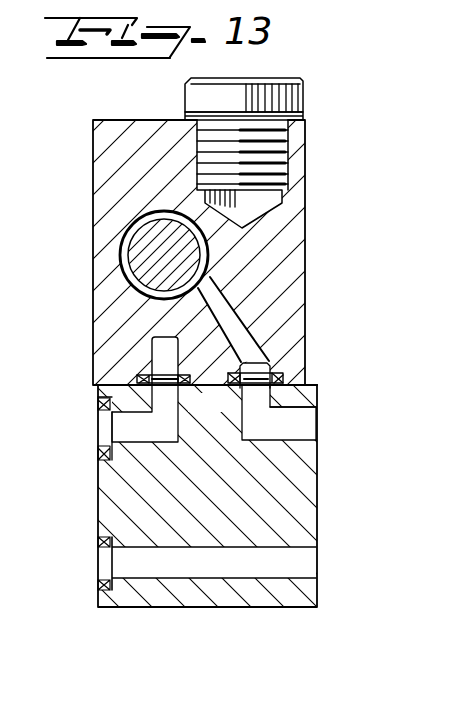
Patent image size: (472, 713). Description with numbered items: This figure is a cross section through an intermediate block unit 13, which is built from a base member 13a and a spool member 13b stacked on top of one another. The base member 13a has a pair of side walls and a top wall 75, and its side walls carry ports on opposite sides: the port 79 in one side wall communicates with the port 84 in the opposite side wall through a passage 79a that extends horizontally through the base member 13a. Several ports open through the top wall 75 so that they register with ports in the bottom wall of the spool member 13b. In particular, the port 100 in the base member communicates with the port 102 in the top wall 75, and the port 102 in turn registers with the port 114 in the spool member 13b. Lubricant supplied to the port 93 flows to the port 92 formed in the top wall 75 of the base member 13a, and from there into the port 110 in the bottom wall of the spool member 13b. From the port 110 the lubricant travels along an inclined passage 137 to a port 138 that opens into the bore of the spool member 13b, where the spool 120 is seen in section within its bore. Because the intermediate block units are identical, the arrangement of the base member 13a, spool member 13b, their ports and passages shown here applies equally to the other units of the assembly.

The intermediate block unit 13 is at (345, 356).
The base member 13a is at (98, 471).
The spool member 13b is at (93, 238).
The top wall 75 is at (200, 383).
The port 79 is at (104, 562).
The passage 79a is at (197, 557).
The port 84 is at (318, 571).
The port 92 is at (317, 390).
The port 93 is at (322, 437).
The port 100 is at (98, 440).
The port 102 is at (172, 400).
The port 110 is at (258, 365).
The port 114 is at (152, 360).
The spool 120 is at (138, 220).
The passage 137 is at (240, 326).
The port 138 is at (203, 291).